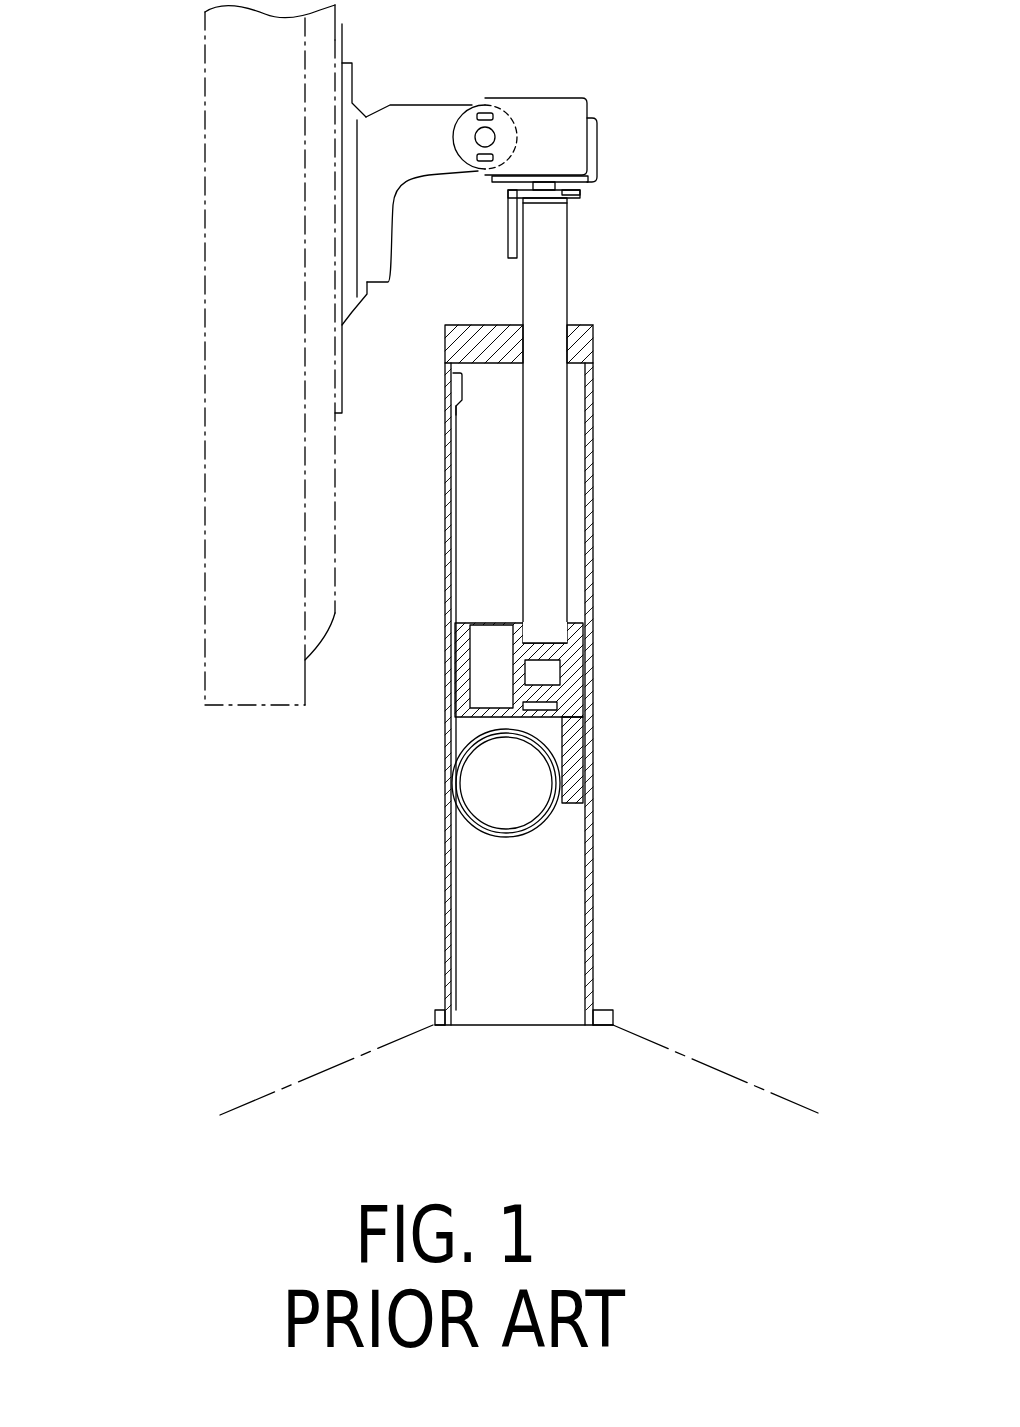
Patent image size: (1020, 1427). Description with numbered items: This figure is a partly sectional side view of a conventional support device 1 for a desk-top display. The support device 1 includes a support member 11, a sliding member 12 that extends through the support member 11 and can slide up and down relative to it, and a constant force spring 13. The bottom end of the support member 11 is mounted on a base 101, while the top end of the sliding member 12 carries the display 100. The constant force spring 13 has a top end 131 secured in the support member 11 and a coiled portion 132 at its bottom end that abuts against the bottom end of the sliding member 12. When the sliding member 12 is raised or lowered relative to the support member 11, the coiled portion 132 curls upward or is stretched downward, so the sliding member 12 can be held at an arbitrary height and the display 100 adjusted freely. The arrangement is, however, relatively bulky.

The support device 1 is at (688, 87).
The support member 11 is at (590, 520).
The sliding member 12 is at (547, 280).
The constant force spring 13 is at (543, 840).
The top end 131 is at (457, 392).
The coiled portion 132 is at (547, 808).
The display 100 is at (243, 447).
The base 101 is at (712, 1068).